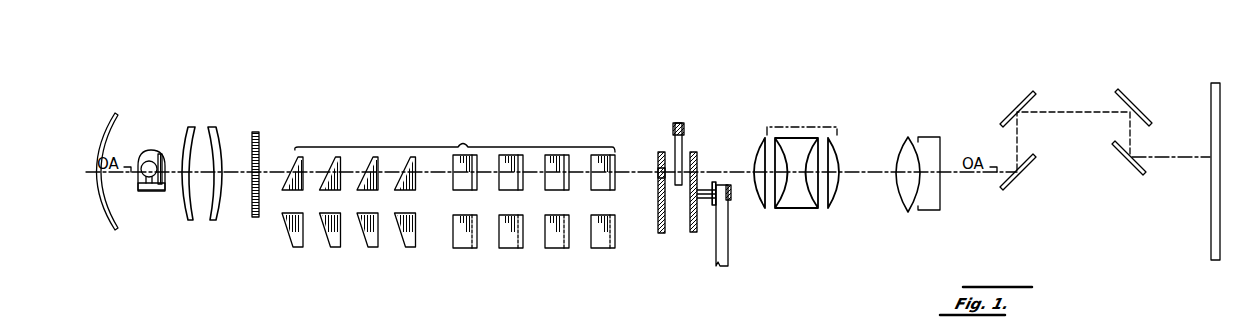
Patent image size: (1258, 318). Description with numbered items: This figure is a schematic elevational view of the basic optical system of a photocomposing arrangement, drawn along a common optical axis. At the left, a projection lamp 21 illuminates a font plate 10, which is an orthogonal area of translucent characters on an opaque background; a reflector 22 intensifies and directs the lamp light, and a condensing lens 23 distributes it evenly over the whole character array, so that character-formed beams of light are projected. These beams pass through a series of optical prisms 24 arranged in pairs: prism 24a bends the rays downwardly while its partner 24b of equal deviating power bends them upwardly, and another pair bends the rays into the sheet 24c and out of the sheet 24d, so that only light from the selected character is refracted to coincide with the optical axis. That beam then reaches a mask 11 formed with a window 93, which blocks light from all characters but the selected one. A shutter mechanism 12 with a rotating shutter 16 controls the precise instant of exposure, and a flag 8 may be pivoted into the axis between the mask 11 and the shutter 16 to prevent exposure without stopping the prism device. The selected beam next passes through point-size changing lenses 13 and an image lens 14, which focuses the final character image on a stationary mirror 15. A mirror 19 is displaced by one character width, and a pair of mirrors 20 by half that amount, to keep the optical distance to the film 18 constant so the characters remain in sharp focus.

The reflector 22 is at (133, 101).
The projection lamp 21 is at (149, 191).
The condensing lens 23 is at (183, 120).
The font plate 10 is at (259, 150).
The optical prisms 24 is at (464, 144).
The prism 24a is at (287, 163).
The prism 24b is at (286, 226).
The prism 24c is at (462, 180).
The prism 24d is at (460, 238).
The mask 11 is at (658, 158).
The window 93 is at (660, 175).
The flag 8 is at (683, 130).
The shutter 16 is at (699, 160).
The shutter mechanism 12 is at (731, 214).
The point-size changing lenses 13 is at (802, 128).
The image lens 14 is at (927, 142).
The stationary mirror 15 is at (1003, 186).
The pair of mirrors 20 is at (1113, 100).
The mirror 19 is at (1118, 148).
The film 18 is at (1220, 130).